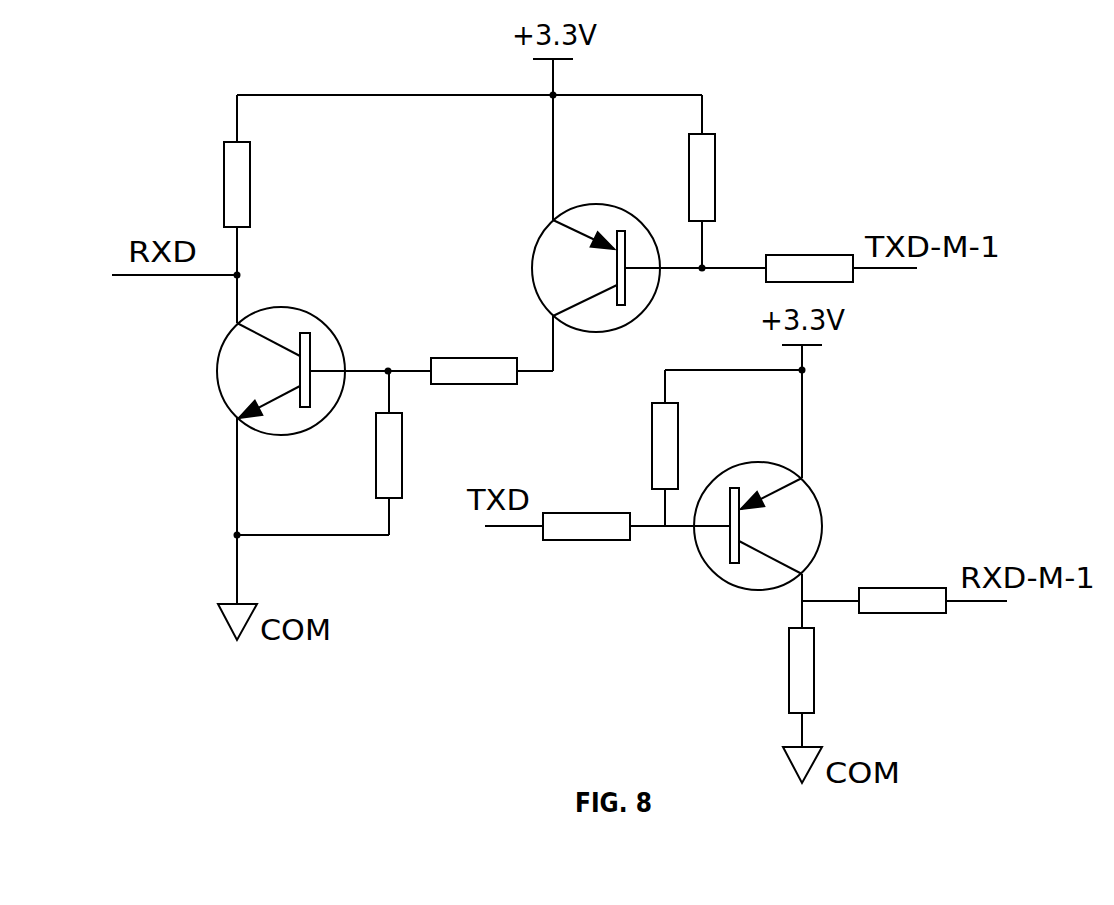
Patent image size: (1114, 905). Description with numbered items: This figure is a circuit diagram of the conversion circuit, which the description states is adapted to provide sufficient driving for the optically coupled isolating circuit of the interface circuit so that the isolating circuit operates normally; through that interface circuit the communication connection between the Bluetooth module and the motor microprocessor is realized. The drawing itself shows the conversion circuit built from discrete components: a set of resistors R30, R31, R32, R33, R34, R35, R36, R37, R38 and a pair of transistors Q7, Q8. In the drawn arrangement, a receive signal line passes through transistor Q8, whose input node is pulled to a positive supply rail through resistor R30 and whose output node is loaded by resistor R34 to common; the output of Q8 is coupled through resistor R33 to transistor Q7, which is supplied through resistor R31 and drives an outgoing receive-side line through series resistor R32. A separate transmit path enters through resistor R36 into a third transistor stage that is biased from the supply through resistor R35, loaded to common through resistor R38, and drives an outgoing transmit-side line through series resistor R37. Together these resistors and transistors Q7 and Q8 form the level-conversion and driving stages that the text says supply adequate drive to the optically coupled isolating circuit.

The pull-up resistor R30 is at (268, 209).
The pull-up resistor R31 is at (730, 181).
The series resistor R32 is at (841, 250).
The base resistor R33 is at (492, 352).
The base pull-down resistor R34 is at (419, 453).
The pull-up resistor R35 is at (695, 448).
The base resistor R36 is at (636, 506).
The series resistor R37 is at (933, 582).
The pull-down resistor R38 is at (833, 687).
The transistor Q7 is at (649, 245).
The transistor Q8 is at (302, 352).